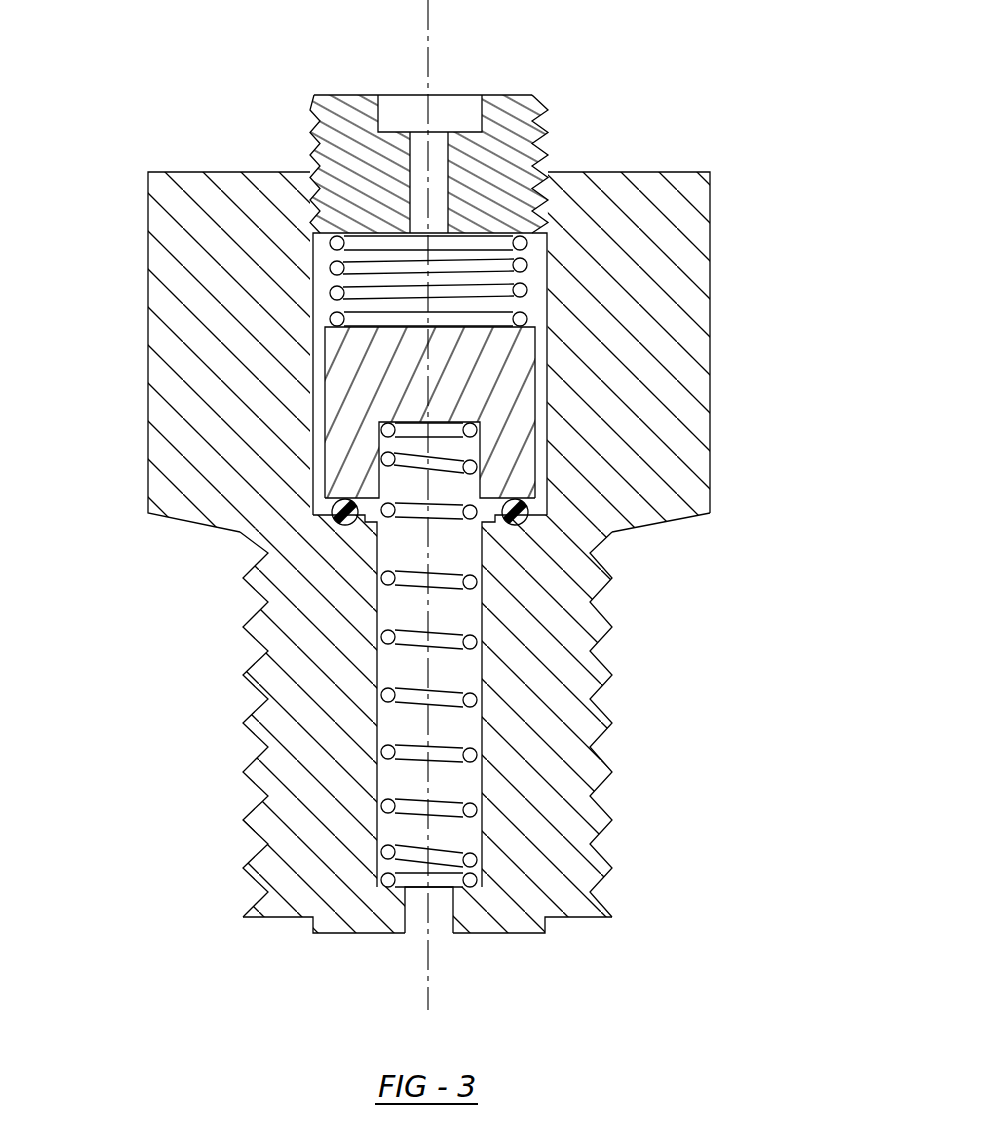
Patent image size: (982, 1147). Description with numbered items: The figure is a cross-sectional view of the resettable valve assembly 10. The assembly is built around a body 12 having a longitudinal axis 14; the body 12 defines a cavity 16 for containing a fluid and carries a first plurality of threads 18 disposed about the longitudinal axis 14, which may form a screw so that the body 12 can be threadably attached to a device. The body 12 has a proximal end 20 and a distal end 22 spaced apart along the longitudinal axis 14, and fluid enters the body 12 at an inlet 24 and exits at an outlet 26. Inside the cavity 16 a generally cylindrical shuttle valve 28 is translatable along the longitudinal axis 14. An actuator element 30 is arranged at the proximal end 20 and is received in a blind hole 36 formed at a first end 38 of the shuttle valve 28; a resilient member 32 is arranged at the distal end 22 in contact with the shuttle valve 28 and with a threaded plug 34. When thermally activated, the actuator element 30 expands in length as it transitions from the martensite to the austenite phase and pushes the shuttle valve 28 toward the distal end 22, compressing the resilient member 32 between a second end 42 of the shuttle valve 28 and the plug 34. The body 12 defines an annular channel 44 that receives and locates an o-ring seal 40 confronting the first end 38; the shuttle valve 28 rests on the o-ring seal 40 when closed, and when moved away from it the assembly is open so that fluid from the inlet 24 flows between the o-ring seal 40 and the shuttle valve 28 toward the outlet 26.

The resettable valve assembly 10 is at (146, 129).
The body 12 is at (712, 322).
The longitudinal axis 14 is at (428, 32).
The cavity 16 is at (312, 245).
The first plurality of threads 18 is at (600, 748).
The proximal end 20 is at (610, 943).
The distal end 22 is at (650, 145).
The inlet 24 is at (447, 897).
The outlet 26 is at (447, 140).
The shuttle valve 28 is at (520, 418).
The actuator element 30 is at (478, 590).
The resilient member 32 is at (525, 291).
The threaded plug 34 is at (548, 130).
The blind hole 36 is at (480, 454).
The first end 38 is at (343, 505).
The o-ring seal 40 is at (355, 517).
The second end 42 is at (362, 327).
The annular channel 44 is at (358, 522).